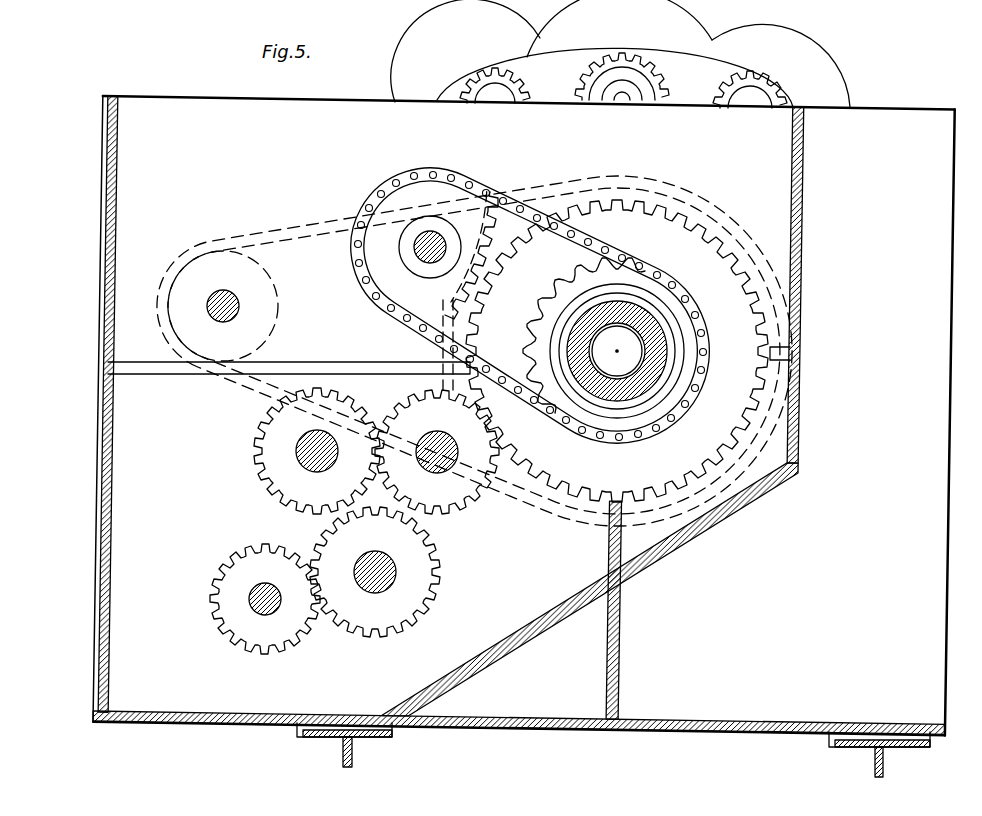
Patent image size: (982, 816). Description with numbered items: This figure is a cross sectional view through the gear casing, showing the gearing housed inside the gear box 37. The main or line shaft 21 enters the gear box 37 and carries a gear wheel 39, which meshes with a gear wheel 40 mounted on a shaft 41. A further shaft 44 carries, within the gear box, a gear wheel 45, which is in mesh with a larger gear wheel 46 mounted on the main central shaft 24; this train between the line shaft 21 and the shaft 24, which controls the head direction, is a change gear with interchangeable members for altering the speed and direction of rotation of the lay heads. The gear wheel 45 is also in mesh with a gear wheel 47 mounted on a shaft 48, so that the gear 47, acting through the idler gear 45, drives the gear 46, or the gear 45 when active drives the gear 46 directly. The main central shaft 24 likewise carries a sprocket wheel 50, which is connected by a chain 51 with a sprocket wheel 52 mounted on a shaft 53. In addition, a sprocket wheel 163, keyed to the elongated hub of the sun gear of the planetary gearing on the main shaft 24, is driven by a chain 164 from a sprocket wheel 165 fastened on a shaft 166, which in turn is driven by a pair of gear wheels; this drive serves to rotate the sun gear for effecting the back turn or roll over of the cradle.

The main or line shaft 21 is at (255, 608).
The main central shaft 24 is at (582, 383).
The gear box 37 is at (135, 505).
The gear wheel 39 is at (238, 577).
The gear wheel 40 is at (358, 612).
The shaft 41 is at (397, 568).
The shaft 44 is at (448, 473).
The gear wheel 45 is at (410, 413).
The larger gear wheel 46 is at (568, 467).
The gear wheel 47 is at (278, 465).
The shaft 48 is at (298, 449).
The sprocket wheel 50 is at (566, 293).
The chain 51 is at (581, 240).
The sprocket wheel 52 is at (500, 260).
The shaft 53 is at (420, 258).
The sprocket wheel 163 is at (680, 196).
The chain 164 is at (548, 188).
The sprocket wheel 165 is at (250, 284).
The shaft 166 is at (240, 301).